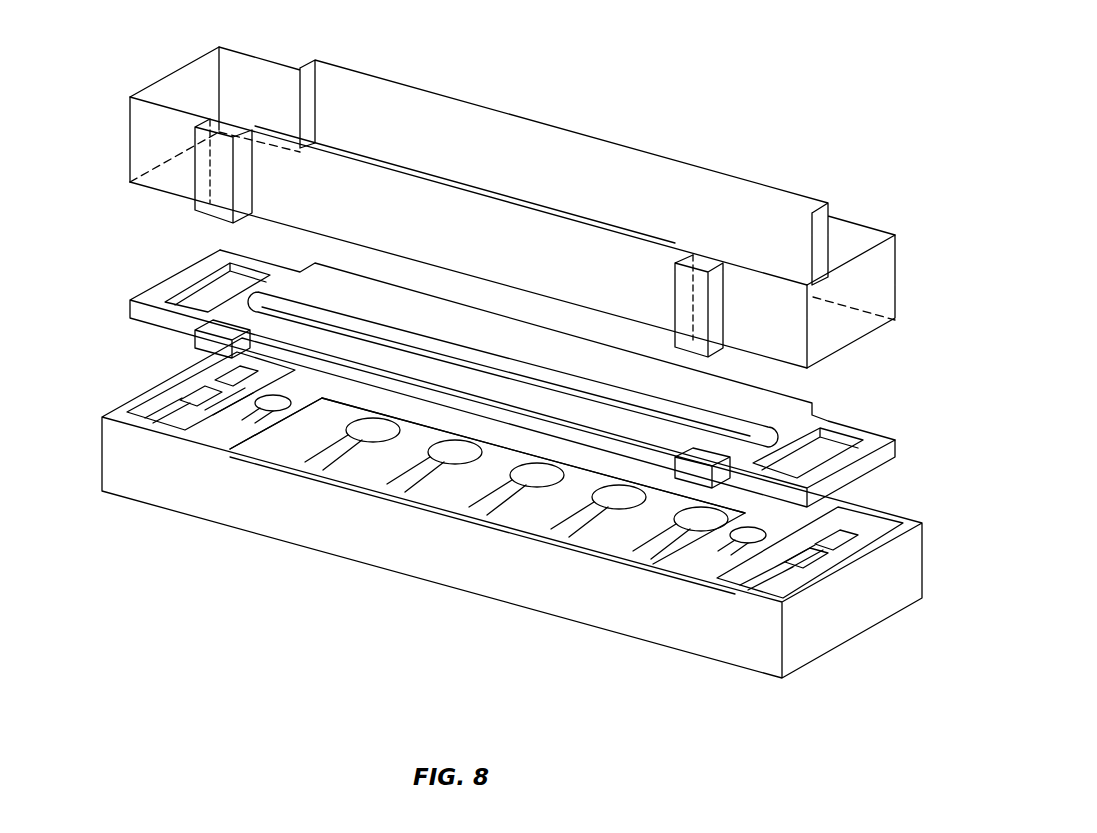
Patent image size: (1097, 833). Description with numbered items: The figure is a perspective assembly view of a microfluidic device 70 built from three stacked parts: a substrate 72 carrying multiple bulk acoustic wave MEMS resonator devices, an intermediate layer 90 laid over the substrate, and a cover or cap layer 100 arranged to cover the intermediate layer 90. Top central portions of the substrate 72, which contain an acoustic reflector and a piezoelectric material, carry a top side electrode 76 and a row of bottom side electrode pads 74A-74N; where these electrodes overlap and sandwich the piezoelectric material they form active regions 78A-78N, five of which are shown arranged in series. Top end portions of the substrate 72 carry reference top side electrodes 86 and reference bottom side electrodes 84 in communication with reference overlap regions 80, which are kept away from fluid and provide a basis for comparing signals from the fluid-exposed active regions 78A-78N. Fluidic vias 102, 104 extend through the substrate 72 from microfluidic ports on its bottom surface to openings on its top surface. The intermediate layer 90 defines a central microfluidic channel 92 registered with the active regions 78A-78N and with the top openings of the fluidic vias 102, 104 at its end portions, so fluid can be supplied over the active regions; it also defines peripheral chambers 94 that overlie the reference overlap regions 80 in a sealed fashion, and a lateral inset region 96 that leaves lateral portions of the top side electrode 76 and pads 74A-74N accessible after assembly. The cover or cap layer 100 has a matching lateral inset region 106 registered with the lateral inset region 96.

The microfluidic device 70 is at (824, 66).
The substrate 72 is at (810, 635).
The bottom side electrode pad 74A is at (318, 462).
The bottom side electrode pad 74N is at (652, 552).
The top side electrode 76 is at (280, 437).
The active region 78A is at (380, 436).
The active region 78N is at (700, 520).
The reference overlap region 80 is at (225, 377).
The reference bottom side electrode 84 is at (178, 403).
The reference top side electrode 86 is at (145, 408).
The intermediate layer 90 is at (133, 298).
The central microfluidic channel 92 is at (723, 433).
The peripheral chamber 94 is at (217, 297).
The lateral inset region 96 is at (505, 412).
The cover or cap layer 100 is at (137, 95).
The fluidic via 102 is at (235, 440).
The fluidic via 104 is at (757, 540).
The lateral inset region 106 is at (415, 222).